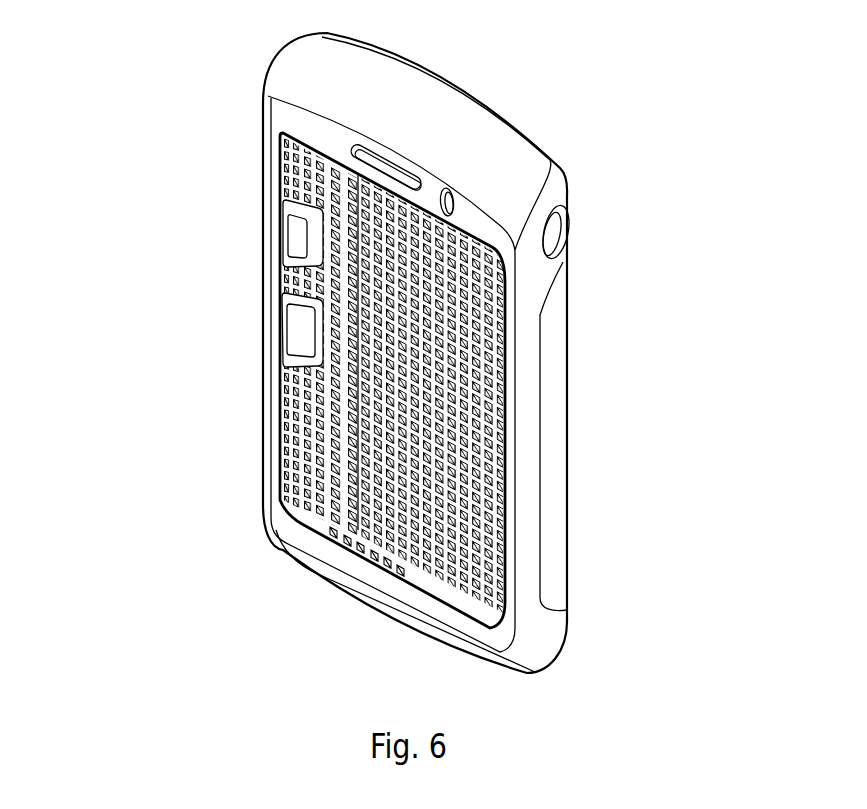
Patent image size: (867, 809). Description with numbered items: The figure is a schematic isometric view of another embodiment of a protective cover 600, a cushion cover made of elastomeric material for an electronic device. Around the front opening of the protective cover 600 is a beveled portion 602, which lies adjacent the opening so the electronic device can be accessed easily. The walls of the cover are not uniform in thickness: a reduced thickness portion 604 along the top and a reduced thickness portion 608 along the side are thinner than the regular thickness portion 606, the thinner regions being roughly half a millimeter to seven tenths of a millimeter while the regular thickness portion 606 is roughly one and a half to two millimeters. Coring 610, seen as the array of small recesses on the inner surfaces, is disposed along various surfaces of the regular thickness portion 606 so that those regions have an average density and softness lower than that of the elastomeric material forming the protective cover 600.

The protective cover 600 is at (247, 172).
The beveled portion 602 is at (273, 402).
The reduced thickness portion 604 is at (441, 113).
The regular thickness portion 606 is at (553, 193).
The reduced thickness portion 608 is at (558, 532).
The coring 610 is at (280, 475).